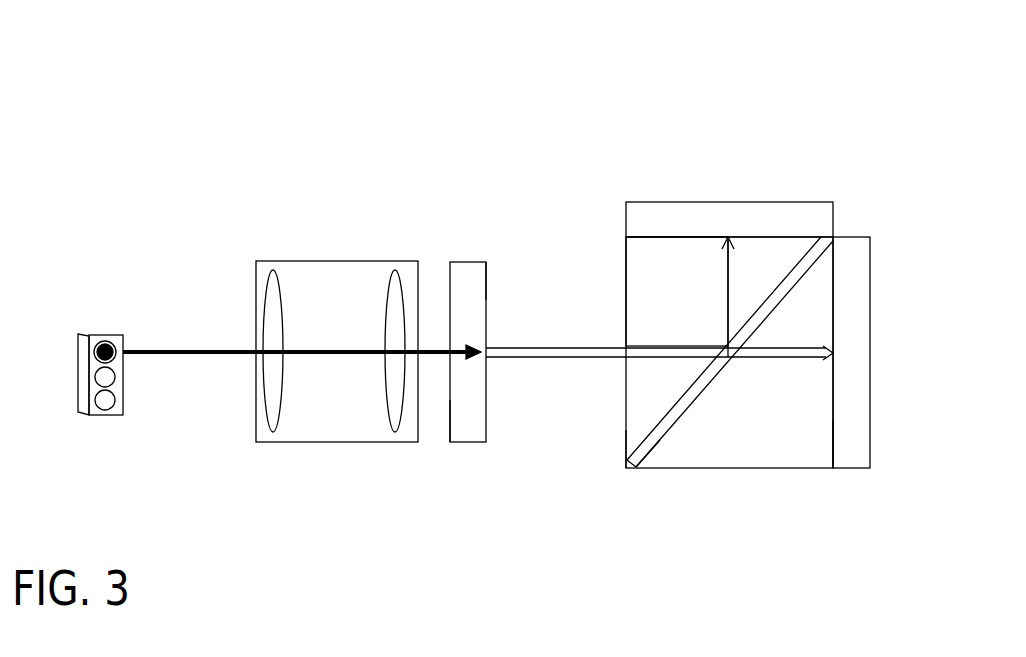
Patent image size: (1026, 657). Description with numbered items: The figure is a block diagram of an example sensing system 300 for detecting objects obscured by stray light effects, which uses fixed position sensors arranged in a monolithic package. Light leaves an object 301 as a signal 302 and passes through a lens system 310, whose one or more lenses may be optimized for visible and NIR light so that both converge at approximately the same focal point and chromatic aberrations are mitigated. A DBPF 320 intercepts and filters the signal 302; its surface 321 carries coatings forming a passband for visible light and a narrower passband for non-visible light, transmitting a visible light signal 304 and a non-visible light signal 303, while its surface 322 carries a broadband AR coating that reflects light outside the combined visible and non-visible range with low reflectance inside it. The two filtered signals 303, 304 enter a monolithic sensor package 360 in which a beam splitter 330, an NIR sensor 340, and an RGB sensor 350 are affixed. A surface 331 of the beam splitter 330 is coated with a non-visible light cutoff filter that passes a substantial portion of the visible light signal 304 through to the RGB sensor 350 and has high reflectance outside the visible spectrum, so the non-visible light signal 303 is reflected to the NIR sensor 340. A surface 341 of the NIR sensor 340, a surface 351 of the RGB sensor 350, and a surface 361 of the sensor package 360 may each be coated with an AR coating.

The sensing system 300 is at (94, 57).
The object 301 is at (105, 412).
The signal 302 is at (207, 347).
The non-visible light signal 303 is at (605, 347).
The visible light signal 304 is at (577, 359).
The lens system 310 is at (357, 412).
The DBPF 320 is at (462, 261).
The surface of the DBPF 321 is at (450, 423).
The surface of the DBPF 322 is at (486, 283).
The beam splitter 330 is at (673, 423).
The surface of the beam splitter 331 is at (643, 437).
The NIR sensor 340 is at (695, 200).
The surface of the NIR sensor 341 is at (798, 240).
The RGB sensor 350 is at (848, 468).
The surface of the RGB sensor 351 is at (833, 443).
The monolithic sensor package 360 is at (683, 276).
The surface of the sensor package 361 is at (623, 442).